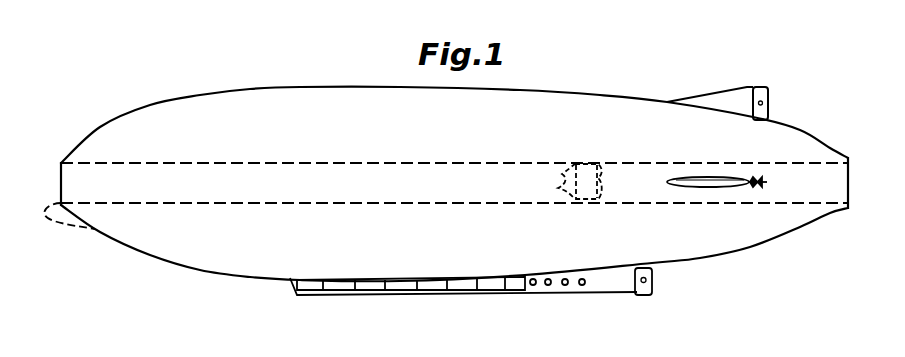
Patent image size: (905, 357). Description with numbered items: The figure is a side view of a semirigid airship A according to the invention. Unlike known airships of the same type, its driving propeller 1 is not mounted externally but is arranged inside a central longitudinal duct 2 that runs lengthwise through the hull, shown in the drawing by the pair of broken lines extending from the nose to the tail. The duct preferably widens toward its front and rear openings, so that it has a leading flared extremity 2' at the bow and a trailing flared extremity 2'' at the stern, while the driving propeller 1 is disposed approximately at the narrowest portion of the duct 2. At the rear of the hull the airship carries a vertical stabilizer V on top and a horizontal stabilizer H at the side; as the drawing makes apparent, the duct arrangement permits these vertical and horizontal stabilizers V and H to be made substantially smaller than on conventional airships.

The driving propeller 1 is at (602, 172).
The central longitudinal duct 2 is at (454, 161).
The leading flared extremity 2' is at (87, 148).
The trailing flared extremity 2'' is at (843, 152).
The semirigid airship A is at (549, 70).
The horizontal stabilizer H is at (708, 177).
The vertical stabilizer V is at (740, 86).